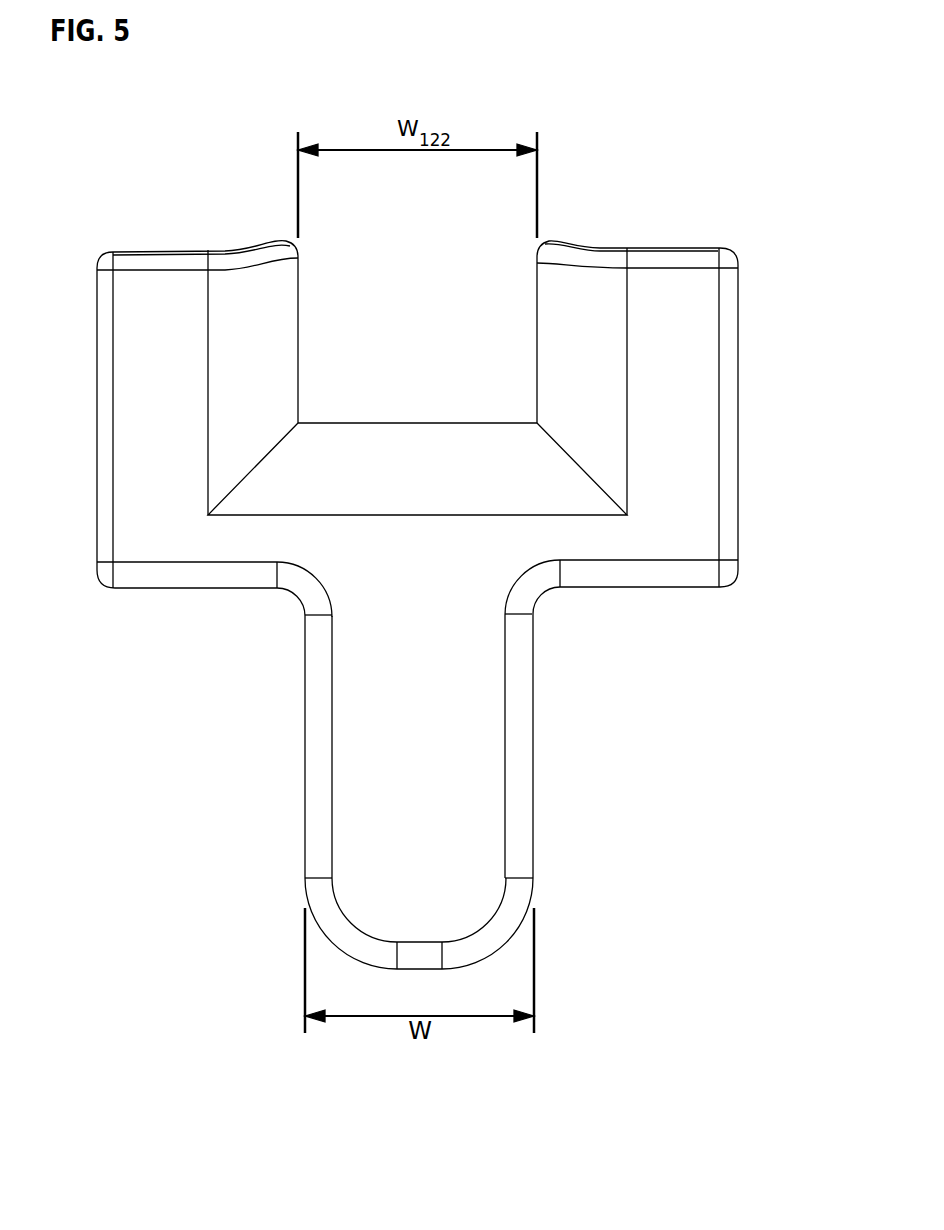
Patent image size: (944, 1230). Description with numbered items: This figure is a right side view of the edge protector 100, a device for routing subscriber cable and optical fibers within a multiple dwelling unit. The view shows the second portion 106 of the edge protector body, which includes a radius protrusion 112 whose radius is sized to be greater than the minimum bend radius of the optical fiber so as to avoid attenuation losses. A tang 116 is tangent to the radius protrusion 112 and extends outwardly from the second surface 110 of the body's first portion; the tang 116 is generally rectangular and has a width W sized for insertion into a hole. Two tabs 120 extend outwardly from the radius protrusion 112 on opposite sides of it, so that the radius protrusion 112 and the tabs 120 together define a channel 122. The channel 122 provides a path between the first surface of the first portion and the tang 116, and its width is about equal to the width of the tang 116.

The edge protector 100 is at (416, 554).
The second portion 106 is at (249, 222).
The second surface 110 is at (622, 587).
The radius protrusion 112 is at (430, 440).
The tang 116 is at (488, 753).
The tab 120 is at (133, 412).
The channel 122 is at (420, 260).